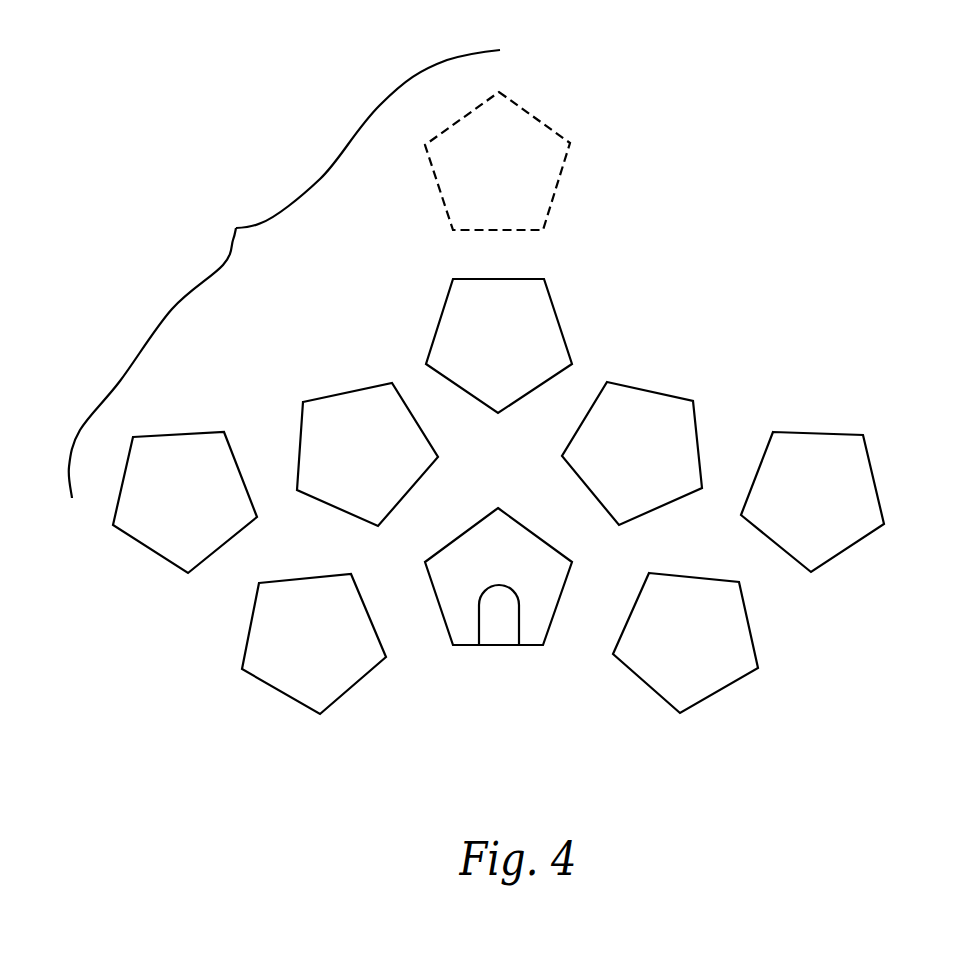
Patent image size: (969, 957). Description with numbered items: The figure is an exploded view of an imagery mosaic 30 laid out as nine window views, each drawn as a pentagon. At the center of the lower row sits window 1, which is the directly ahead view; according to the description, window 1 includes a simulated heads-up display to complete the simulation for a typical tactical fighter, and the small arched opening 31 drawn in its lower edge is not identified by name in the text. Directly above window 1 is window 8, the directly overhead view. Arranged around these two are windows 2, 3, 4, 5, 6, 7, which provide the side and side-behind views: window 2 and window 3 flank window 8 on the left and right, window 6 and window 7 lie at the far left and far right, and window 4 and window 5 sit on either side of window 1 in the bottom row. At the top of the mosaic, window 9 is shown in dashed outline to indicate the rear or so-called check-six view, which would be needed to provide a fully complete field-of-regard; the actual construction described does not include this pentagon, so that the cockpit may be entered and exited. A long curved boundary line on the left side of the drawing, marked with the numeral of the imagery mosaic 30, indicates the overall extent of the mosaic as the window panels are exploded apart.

The window 1 is at (498, 576).
The window 2 is at (367, 454).
The window 3 is at (632, 453).
The window 4 is at (314, 644).
The window 5 is at (685, 643).
The window 6 is at (185, 502).
The window 7 is at (812, 502).
The window 8 is at (499, 346).
The window 9 is at (497, 161).
The imagery mosaic 30 is at (284, 274).
The door opening in first panel 31 is at (496, 623).